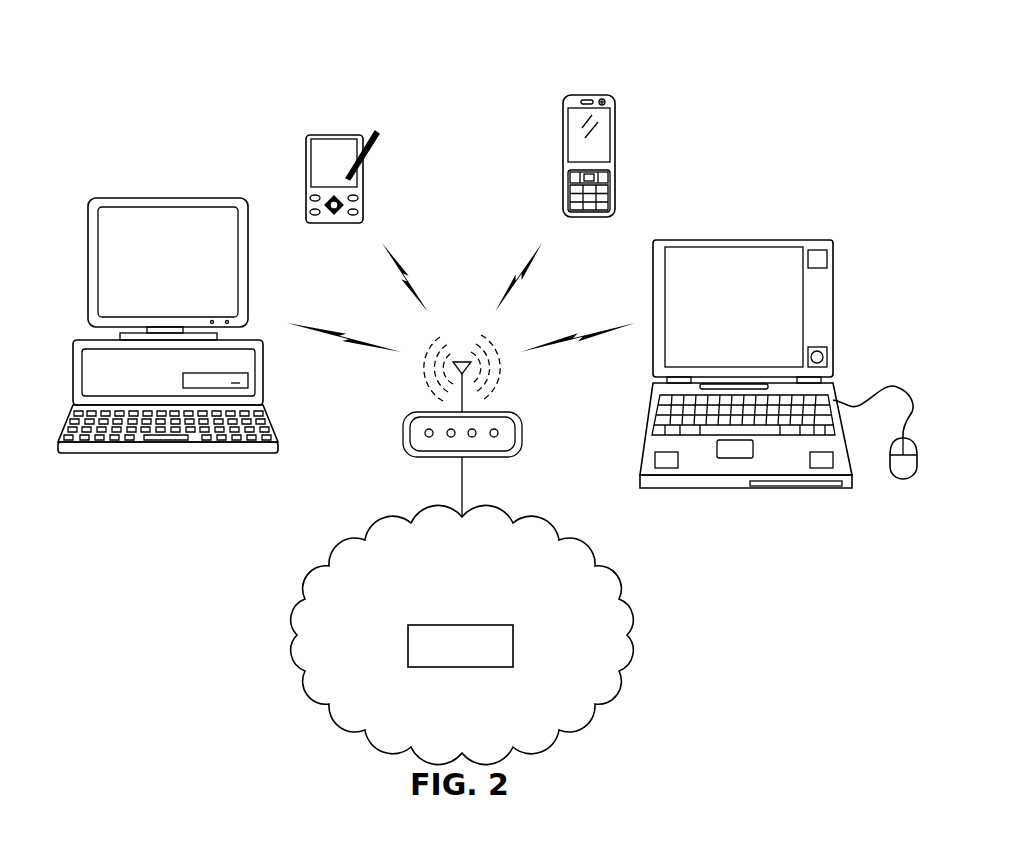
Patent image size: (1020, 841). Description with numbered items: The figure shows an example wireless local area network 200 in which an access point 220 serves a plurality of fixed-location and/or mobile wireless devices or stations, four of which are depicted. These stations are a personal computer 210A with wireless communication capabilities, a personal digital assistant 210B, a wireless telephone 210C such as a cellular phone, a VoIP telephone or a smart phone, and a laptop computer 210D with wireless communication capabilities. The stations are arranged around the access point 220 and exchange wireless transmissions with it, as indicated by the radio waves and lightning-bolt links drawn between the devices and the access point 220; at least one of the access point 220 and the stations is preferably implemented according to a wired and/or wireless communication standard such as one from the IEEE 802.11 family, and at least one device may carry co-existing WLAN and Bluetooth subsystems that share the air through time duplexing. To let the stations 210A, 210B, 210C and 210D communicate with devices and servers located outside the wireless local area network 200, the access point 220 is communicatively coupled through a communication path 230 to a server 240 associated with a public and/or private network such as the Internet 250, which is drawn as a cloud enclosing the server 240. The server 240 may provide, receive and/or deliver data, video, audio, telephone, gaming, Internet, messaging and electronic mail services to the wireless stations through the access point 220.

The wireless local area network 200 is at (779, 104).
The personal computer 210A is at (167, 197).
The personal digital assistant 210B is at (333, 133).
The wireless telephone 210C is at (587, 93).
The laptop computer 210D is at (745, 240).
The access point 220 is at (402, 432).
The communication paths 230 is at (460, 477).
The server 240 is at (408, 643).
The Internet 250 is at (297, 657).